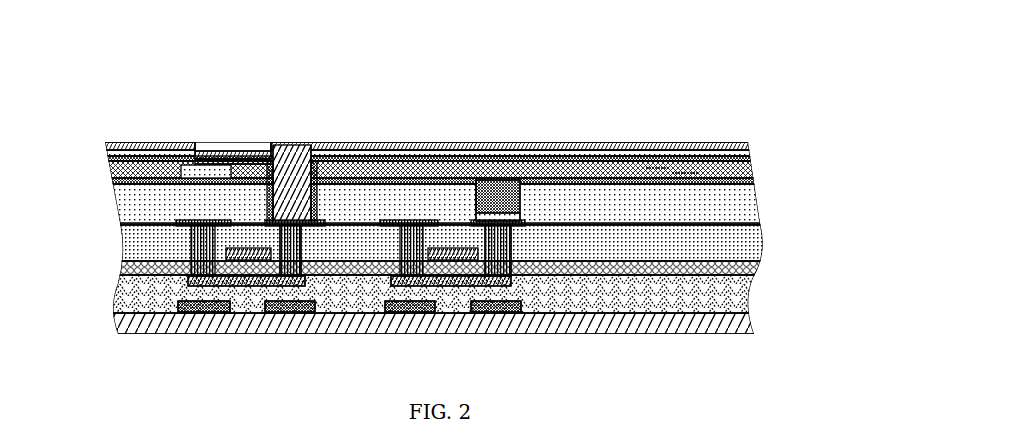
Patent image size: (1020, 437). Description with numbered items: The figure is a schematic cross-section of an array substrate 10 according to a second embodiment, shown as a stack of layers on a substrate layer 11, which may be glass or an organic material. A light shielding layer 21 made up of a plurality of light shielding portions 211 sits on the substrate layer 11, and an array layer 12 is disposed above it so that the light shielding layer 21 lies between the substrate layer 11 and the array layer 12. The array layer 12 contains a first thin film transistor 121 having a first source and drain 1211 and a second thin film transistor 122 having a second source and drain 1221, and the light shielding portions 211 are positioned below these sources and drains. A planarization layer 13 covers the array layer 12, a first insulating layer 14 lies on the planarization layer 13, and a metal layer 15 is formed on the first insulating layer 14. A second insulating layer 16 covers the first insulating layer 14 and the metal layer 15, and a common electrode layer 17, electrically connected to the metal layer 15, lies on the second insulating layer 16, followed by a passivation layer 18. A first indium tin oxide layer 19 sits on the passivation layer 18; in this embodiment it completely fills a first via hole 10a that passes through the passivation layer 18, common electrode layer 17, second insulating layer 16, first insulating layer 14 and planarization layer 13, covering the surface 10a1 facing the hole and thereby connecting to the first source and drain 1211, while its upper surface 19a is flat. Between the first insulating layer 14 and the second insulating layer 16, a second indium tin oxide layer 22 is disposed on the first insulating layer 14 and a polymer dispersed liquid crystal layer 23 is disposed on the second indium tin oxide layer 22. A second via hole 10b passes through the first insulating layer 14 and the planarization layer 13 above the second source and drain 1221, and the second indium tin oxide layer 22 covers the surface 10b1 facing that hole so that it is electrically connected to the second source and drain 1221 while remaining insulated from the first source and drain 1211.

The array substrate 10 is at (398, 69).
The first via hole 10a is at (291, 138).
The surface of the array substrate facing the first via hole 10a1 is at (282, 134).
The second via hole 10b is at (497, 178).
The surface of the array substrate facing the second via hole 10b1 is at (472, 177).
The substrate layer 11 is at (722, 316).
The array layer 12 is at (756, 220).
The first thin film transistor 121 is at (243, 295).
The first source and drain 1211 is at (292, 219).
The second thin film transistor 122 is at (443, 295).
The second source and drain 1221 is at (494, 219).
The planarization layer 13 is at (737, 197).
The first insulating layer 14 is at (742, 174).
The metal layer 15 is at (172, 161).
The second insulating layer 16 is at (736, 160).
The common electrode layer 17 is at (734, 152).
The passivation layer 18 is at (734, 148).
The first indium tin oxide layer 19 is at (726, 139).
The upper surface of the first ITO layer 19a is at (160, 135).
The light shielding layer 21 is at (178, 305).
The light shielding portion 211 is at (206, 306).
The second indium tin oxide layer 22 is at (675, 165).
The polymer dispersed liquid crystal layer 23 is at (644, 162).